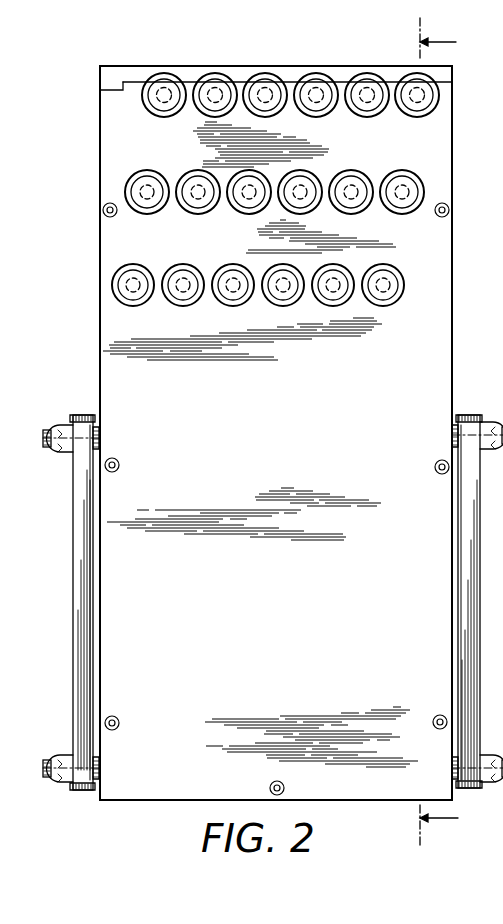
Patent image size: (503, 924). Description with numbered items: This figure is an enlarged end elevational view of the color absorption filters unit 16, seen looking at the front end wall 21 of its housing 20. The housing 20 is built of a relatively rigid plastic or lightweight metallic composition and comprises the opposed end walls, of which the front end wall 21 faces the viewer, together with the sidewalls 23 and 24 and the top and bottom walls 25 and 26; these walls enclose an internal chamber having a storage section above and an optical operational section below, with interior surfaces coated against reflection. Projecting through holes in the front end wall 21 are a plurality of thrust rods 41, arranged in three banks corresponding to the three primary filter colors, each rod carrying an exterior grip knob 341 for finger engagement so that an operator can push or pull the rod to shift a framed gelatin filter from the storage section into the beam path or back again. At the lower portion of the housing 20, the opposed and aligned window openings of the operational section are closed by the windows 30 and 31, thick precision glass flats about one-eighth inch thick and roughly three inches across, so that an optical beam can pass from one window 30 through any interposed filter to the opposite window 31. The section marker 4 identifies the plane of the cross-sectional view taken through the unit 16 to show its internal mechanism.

The section line 4- 4 is at (453, 429).
The color absorption filters unit 16 is at (130, 66).
The housing 20 is at (453, 326).
The end wall 21 is at (302, 623).
The sidewall 23 is at (100, 333).
The sidewall 24 is at (455, 377).
The top wall 25 is at (276, 64).
The bottom wall 26 is at (163, 800).
The window 30 is at (85, 784).
The window 31 is at (465, 560).
The thrust rod 41 is at (428, 88).
The grip knob 341 is at (403, 117).